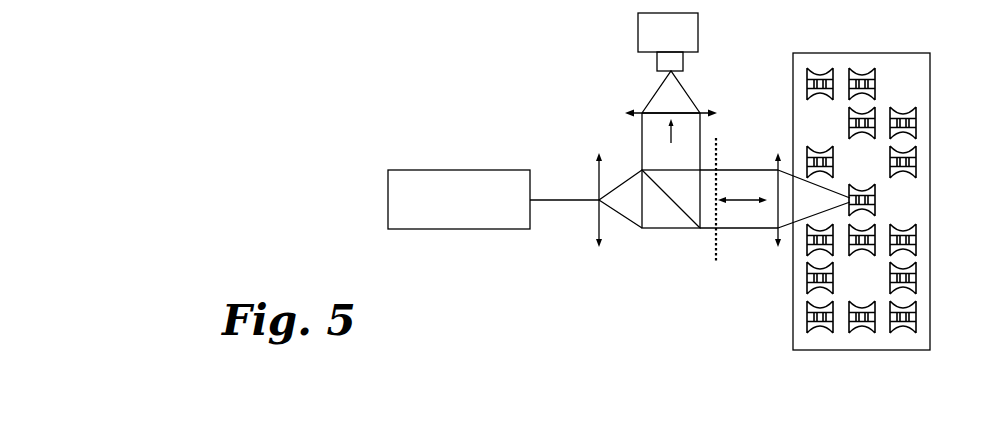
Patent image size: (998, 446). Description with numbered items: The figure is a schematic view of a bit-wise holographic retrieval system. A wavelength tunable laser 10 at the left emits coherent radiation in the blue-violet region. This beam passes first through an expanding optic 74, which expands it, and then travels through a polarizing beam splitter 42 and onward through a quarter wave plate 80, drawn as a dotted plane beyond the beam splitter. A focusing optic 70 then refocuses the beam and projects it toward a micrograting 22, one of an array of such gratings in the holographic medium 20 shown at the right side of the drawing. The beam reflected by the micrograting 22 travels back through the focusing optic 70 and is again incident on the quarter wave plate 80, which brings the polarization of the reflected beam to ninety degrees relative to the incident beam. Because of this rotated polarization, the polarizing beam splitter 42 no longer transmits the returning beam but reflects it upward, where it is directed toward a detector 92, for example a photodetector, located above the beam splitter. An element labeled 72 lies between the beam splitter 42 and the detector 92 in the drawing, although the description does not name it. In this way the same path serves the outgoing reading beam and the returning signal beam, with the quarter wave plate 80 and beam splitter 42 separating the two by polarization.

The wavelength tunable laser 10 is at (415, 220).
The expanding optic 74 is at (597, 158).
The polarizing beam splitter 42 is at (656, 230).
The quarter wave plate 80 is at (716, 254).
The focusing optic 70 is at (776, 246).
The imaging lens 72 is at (709, 112).
The detector 92 is at (687, 29).
The holographic medium 20 is at (930, 316).
The micrograting 22 is at (862, 197).